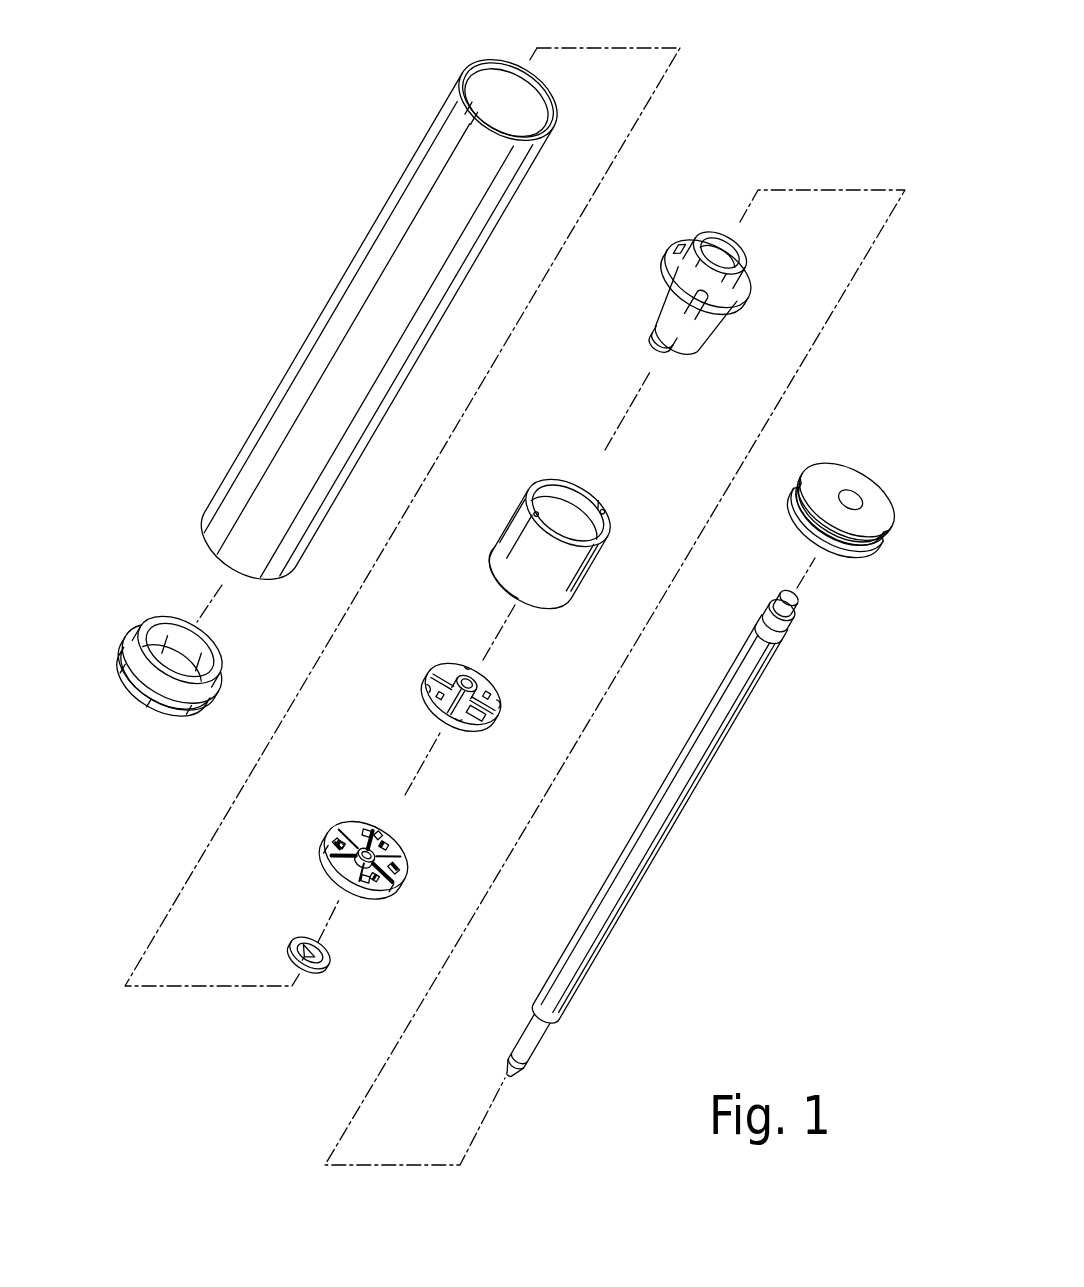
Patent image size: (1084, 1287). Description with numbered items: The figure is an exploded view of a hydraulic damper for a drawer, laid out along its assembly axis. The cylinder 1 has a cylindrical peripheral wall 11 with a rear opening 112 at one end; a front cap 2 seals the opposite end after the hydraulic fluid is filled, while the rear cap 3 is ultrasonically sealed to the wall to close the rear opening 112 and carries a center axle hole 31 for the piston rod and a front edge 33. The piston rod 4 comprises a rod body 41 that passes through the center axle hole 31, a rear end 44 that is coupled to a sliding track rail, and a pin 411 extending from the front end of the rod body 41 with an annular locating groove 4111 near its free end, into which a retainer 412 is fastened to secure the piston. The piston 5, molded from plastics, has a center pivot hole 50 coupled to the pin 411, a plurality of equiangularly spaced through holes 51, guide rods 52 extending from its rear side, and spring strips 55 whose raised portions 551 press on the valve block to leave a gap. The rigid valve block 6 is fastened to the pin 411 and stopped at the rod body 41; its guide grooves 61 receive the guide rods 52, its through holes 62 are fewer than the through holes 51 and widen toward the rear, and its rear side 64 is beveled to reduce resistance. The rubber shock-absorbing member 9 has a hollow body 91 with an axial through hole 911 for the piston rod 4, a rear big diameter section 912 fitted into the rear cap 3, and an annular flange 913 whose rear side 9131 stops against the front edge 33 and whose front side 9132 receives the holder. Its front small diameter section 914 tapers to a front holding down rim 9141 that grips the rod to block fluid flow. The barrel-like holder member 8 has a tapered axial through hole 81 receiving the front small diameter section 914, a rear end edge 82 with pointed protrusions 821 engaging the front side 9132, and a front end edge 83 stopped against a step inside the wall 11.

The cylinder 1 is at (320, 254).
The cylindrical peripheral wall 11 is at (492, 96).
The rear opening 112 is at (540, 90).
The front cap 2 is at (226, 632).
The rear cap 3 is at (793, 550).
The center axle hole 31 is at (854, 494).
The front edge 33 is at (792, 527).
The piston rod 4 is at (660, 768).
The rod body 41 is at (718, 690).
The pin 411 is at (532, 1048).
The annular locating groove 4111 is at (524, 1068).
The retainer 412 is at (313, 966).
The rear end 44 is at (773, 620).
The piston 5 is at (318, 844).
The center pivot hole 50 is at (375, 877).
The through holes 51 is at (363, 830).
The guide rods 52 is at (378, 827).
The spring strips 55 is at (400, 845).
The raised portion 551 is at (352, 830).
The rigid valve block 6 is at (422, 675).
The guide grooves 61 is at (470, 673).
The through holes 62 is at (480, 682).
The rear side 64 is at (488, 702).
The holder member 8 is at (590, 584).
The tapered axial through hole 81 is at (563, 506).
The rear end edge 82 is at (597, 500).
The pointed protrusions 821 is at (538, 508).
The front end edge 83 is at (512, 589).
The shock-absorbing member 9 is at (766, 275).
The hollow body 91 is at (664, 296).
The axial through hole 911 is at (718, 249).
The rear big diameter section 912 is at (745, 291).
The annular flange 913 is at (734, 312).
The rear side 9131 is at (677, 256).
The front side 9132 is at (689, 306).
The front small diameter section 914 is at (699, 333).
The front holding down rim 9141 is at (680, 356).